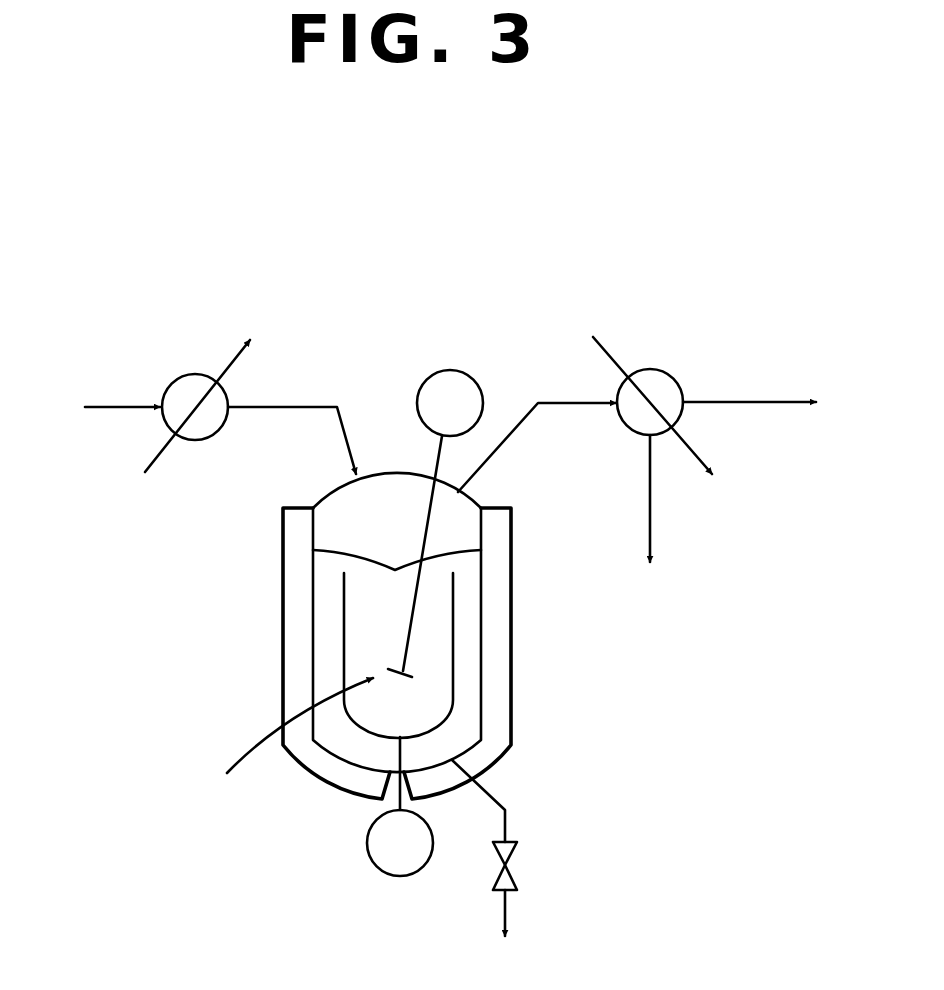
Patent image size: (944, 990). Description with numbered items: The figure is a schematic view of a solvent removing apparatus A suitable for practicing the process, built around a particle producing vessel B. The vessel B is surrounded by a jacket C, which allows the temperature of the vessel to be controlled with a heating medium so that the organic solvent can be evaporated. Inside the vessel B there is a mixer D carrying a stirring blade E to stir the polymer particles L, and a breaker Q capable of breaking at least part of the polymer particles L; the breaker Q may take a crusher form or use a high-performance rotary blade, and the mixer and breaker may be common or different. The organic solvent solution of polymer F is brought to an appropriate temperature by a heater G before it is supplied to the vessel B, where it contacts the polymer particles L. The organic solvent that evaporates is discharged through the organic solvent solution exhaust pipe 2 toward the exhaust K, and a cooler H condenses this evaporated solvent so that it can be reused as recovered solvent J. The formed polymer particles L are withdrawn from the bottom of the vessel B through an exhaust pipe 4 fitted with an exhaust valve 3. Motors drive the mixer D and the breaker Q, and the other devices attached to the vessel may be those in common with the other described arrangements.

The organic solvent solution exhaust pipe 2 is at (578, 401).
The exhaust valve 3 is at (515, 860).
The exhaust pipe 4 is at (508, 905).
The solvent removing apparatus A is at (449, 375).
The particle producing vessel B is at (478, 499).
The jacket C is at (505, 717).
The mixer D is at (372, 865).
The blade of the mixer E is at (453, 657).
The organic solvent solution of polymer F is at (102, 409).
The heater G is at (205, 440).
The cooler H is at (677, 378).
The heating medium I is at (122, 408).
The recovered solvent J is at (643, 525).
The exhaust K is at (771, 403).
The polymer particles L is at (362, 834).
The breaker Q is at (410, 668).